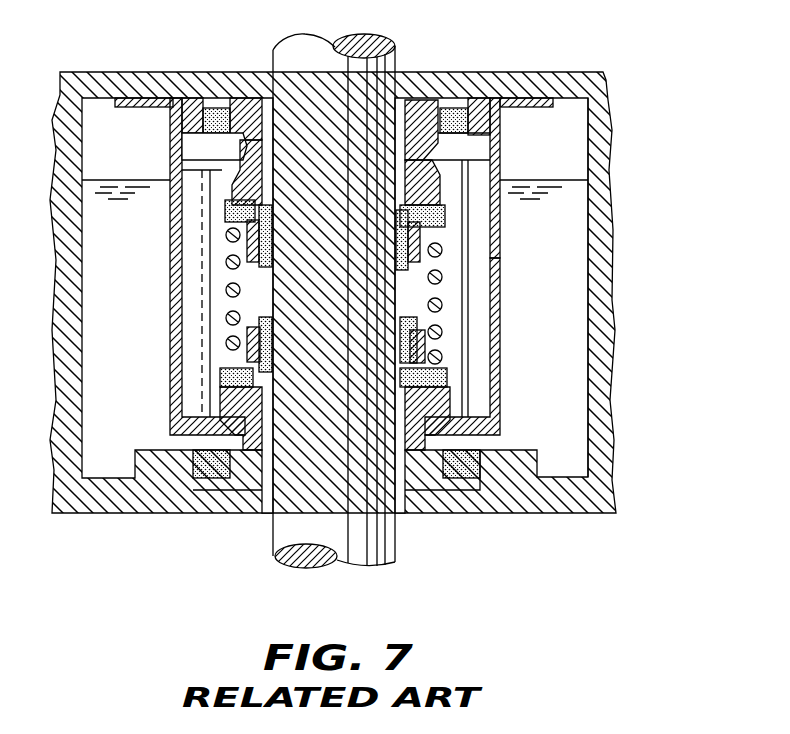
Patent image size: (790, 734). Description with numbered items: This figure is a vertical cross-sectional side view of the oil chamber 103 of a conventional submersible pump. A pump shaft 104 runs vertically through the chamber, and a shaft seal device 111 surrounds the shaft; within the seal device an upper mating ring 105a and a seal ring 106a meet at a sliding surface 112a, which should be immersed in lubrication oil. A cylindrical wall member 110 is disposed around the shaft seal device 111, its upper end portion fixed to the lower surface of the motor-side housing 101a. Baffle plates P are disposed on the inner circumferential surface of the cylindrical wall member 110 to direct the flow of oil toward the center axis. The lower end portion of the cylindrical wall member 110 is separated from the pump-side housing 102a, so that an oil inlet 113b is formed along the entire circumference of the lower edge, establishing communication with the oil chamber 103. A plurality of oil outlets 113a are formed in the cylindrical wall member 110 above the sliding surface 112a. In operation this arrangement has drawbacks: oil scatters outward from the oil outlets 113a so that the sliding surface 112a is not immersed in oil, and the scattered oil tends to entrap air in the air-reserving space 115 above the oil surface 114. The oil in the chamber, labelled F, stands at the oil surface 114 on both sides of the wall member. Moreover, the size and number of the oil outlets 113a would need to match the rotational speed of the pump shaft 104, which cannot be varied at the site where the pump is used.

The motor-side housing 101a is at (462, 75).
The pump-side housing 102a is at (467, 500).
The oil chamber 103 is at (583, 289).
The pump shaft 104 is at (342, 547).
The upper mating ring 105a is at (415, 100).
The seal ring 106a is at (430, 190).
The cylindrical wall member 110 is at (498, 367).
The shaft seal device 111 is at (413, 290).
The sliding surface 112a is at (500, 162).
The oil outlets 113a is at (163, 150).
The oil inlet 113b is at (533, 433).
The oil surface 114 is at (118, 180).
The air-reserving space 115 is at (137, 112).
The fluid F is at (522, 97).
The baffle plates P is at (192, 300).